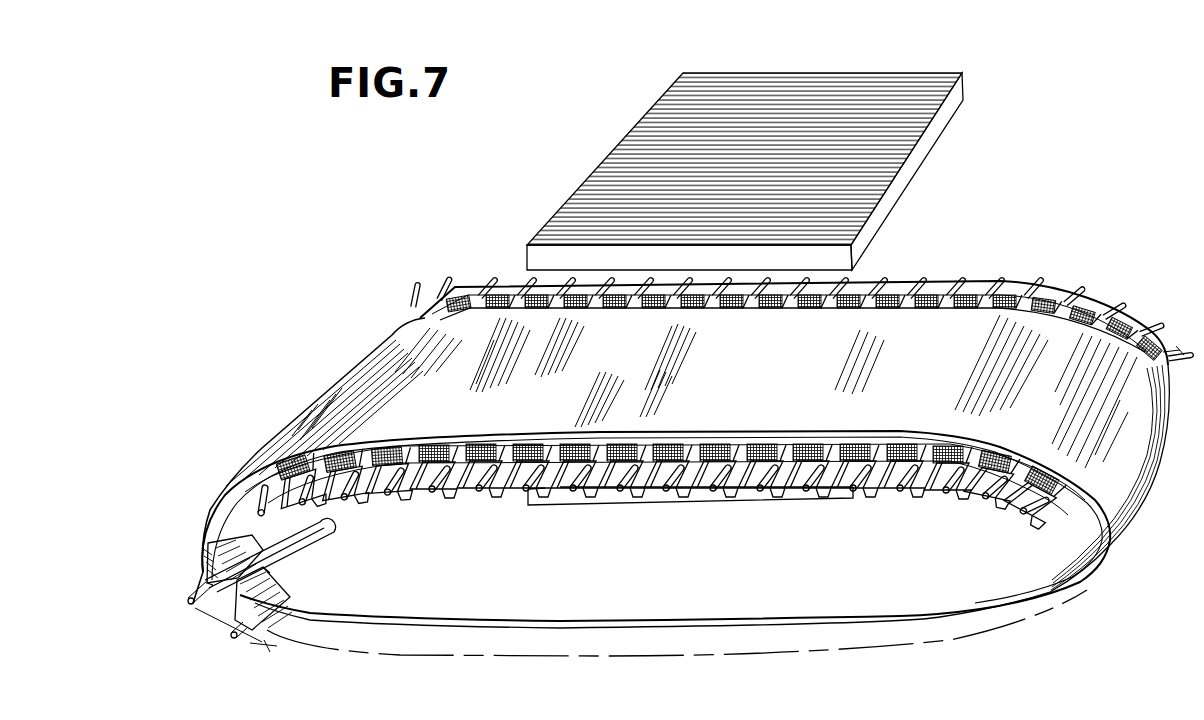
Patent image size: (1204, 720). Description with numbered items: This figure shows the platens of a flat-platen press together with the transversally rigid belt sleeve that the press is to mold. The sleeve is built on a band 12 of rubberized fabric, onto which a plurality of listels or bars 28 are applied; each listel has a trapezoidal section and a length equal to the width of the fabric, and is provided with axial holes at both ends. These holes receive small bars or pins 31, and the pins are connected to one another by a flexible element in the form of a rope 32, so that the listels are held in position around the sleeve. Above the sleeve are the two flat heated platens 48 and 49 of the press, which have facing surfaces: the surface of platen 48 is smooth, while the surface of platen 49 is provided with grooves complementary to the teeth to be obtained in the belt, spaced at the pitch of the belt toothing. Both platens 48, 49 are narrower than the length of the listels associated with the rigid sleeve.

The band of rubberized fabric 12 is at (1103, 318).
The listels or bars 28 is at (483, 305).
The small bars or pins 31 is at (1095, 300).
The rope 32 is at (915, 283).
The flat platen 48 is at (874, 82).
The flat platen 49 is at (683, 505).